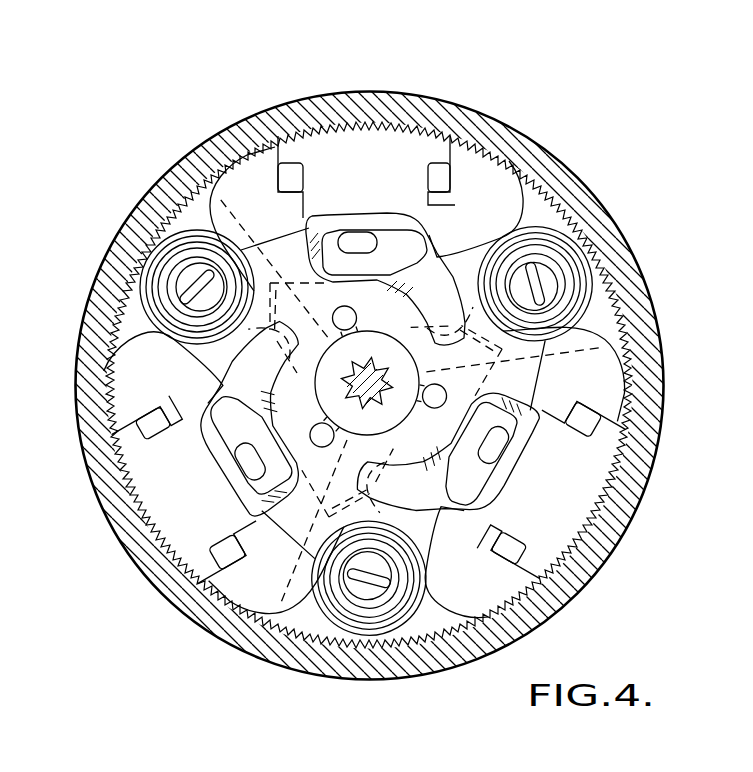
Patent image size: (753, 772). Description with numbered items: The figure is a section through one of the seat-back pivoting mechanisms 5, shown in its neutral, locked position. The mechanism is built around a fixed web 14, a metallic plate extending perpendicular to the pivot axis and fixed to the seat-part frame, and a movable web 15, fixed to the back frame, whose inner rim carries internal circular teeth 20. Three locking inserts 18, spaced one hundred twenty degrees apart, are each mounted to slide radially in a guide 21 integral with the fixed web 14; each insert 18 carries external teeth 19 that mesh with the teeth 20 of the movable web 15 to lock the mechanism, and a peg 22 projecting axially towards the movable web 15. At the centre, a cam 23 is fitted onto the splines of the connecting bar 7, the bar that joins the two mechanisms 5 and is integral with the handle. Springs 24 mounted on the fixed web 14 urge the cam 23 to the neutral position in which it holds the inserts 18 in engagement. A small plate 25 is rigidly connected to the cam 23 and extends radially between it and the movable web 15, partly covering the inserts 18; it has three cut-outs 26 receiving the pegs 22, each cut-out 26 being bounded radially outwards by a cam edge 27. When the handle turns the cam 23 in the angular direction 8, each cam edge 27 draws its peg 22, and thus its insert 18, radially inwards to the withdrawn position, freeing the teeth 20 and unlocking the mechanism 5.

The pivoting mechanism 5 is at (539, 109).
The connecting bar 7 is at (380, 382).
The angular direction 8 is at (235, 95).
The fixed web 14 is at (535, 215).
The movable web 15 is at (620, 486).
The locking insert 18 is at (366, 160).
The external teeth 19 is at (280, 105).
The internal circular teeth 20 is at (617, 307).
The guide 21 is at (457, 200).
The peg 22 is at (355, 243).
The cam 23 is at (280, 605).
The spring 24 is at (577, 243).
The small plate 25 is at (300, 415).
The cut-out 26 is at (250, 397).
The cam edge 27 is at (390, 237).